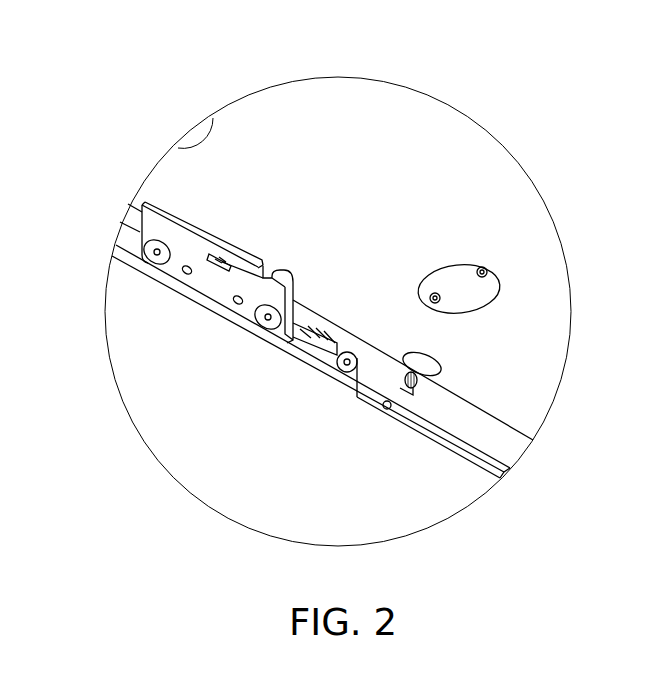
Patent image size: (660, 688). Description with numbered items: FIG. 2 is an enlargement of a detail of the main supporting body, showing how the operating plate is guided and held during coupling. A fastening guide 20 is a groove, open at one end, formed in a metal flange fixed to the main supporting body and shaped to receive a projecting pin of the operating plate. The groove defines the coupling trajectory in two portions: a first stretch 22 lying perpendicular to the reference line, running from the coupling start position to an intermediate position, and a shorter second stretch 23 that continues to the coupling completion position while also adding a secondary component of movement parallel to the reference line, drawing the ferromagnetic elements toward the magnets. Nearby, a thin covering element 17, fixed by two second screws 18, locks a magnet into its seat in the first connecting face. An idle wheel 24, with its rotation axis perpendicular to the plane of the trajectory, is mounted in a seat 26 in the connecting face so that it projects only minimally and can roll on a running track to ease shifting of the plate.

The covering element 17 is at (462, 287).
The second screws 18 is at (484, 270).
The fastening guide 20 is at (266, 270).
The first stretch 22 is at (235, 276).
The second stretch 23 is at (211, 267).
The idle wheels 24 is at (427, 367).
The seats 26 is at (413, 387).